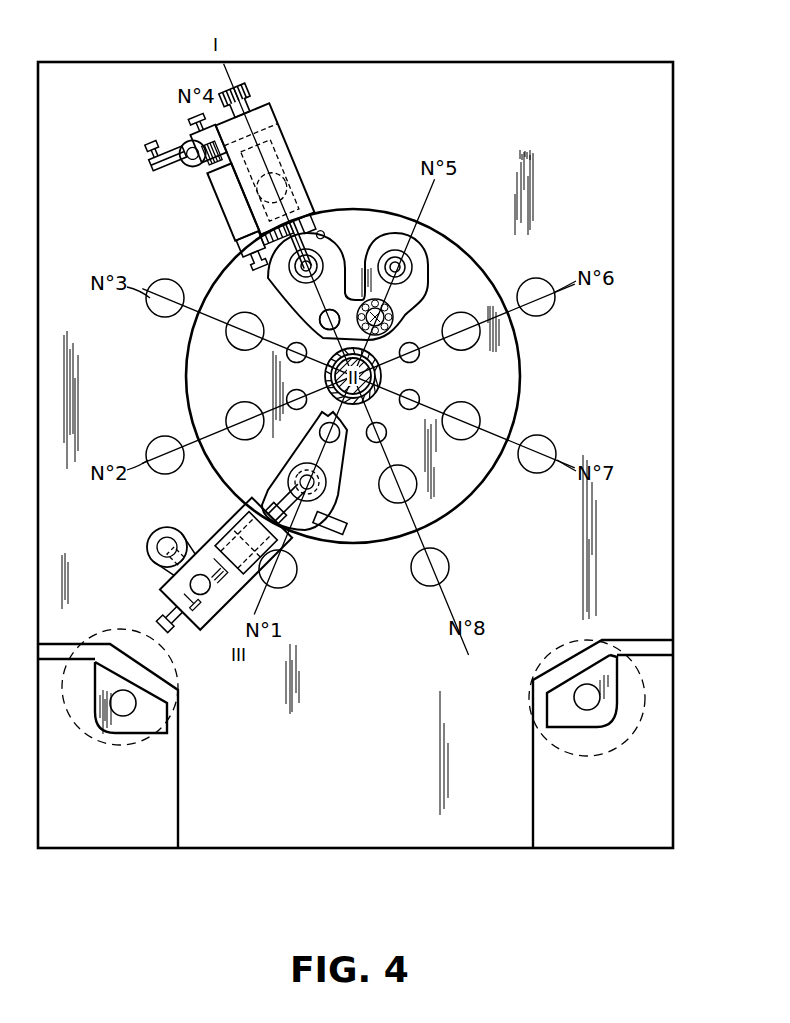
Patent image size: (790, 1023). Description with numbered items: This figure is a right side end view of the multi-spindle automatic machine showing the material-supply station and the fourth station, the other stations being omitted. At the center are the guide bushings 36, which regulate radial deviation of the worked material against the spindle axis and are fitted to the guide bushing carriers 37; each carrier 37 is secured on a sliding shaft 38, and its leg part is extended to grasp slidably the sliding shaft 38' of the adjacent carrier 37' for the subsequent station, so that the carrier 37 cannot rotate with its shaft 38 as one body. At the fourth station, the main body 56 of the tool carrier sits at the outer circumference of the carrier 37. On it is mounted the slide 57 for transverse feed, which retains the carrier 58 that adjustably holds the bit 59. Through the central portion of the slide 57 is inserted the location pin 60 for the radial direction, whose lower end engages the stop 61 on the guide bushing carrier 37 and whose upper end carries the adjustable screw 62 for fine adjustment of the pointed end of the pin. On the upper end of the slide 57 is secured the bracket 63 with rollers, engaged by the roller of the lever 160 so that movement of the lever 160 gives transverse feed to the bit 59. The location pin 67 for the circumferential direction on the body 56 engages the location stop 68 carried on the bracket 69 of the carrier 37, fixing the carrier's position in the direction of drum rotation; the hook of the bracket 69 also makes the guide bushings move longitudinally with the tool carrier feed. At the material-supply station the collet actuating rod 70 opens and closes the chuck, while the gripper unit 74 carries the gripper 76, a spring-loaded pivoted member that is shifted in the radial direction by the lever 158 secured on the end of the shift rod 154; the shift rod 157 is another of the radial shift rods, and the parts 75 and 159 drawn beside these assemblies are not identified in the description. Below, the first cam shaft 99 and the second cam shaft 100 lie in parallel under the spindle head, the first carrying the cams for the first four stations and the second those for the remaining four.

The guide bushing 36 is at (318, 295).
The guide bushing carrier 37 is at (375, 250).
The guide bushing carrier 37' is at (416, 304).
The sliding shaft 38 is at (308, 327).
The sliding shaft 38' is at (407, 318).
The main body of tool carrier 56 is at (222, 196).
The slide for transverse feed 57 is at (271, 108).
The carrier 58 is at (285, 160).
The bit 59 is at (345, 235).
The location pin for radial direction 60 is at (307, 210).
The stop 61 is at (340, 208).
The adjustable screw 62 is at (244, 74).
The bracket 63 is at (271, 108).
The location pin for circumferential direction 67 is at (245, 257).
The stop 68 is at (263, 274).
The bracket 69 is at (278, 294).
The collet actuating rod 70 is at (291, 583).
The gripper unit 74 is at (224, 618).
The piston rod 75 is at (237, 542).
The gripper 76 is at (297, 563).
The first cam shaft 99 is at (130, 712).
The second cam shaft 100 is at (594, 712).
The shift rod 154 is at (150, 547).
The shift rod 157 is at (196, 167).
The lever 158 is at (167, 571).
The bolt 159 is at (152, 166).
The lever 160 is at (151, 174).